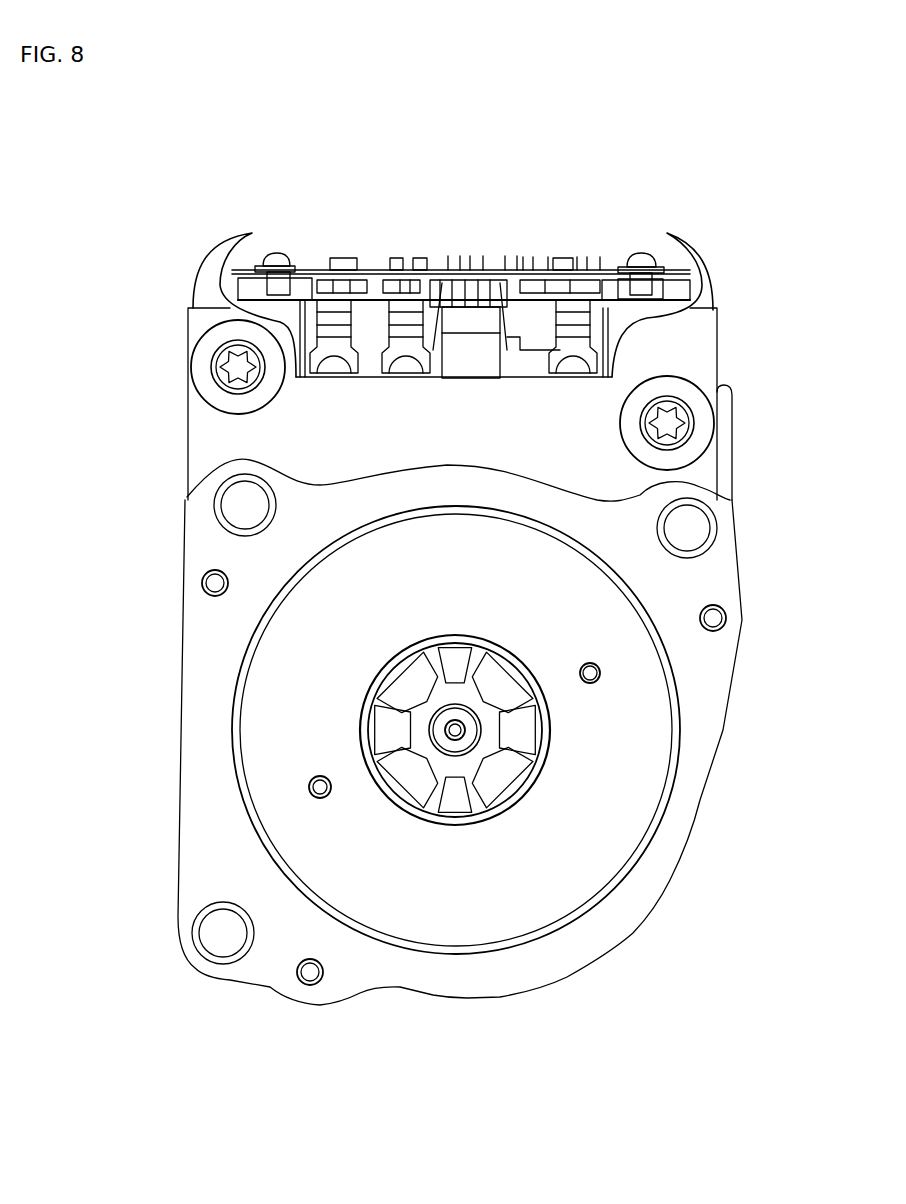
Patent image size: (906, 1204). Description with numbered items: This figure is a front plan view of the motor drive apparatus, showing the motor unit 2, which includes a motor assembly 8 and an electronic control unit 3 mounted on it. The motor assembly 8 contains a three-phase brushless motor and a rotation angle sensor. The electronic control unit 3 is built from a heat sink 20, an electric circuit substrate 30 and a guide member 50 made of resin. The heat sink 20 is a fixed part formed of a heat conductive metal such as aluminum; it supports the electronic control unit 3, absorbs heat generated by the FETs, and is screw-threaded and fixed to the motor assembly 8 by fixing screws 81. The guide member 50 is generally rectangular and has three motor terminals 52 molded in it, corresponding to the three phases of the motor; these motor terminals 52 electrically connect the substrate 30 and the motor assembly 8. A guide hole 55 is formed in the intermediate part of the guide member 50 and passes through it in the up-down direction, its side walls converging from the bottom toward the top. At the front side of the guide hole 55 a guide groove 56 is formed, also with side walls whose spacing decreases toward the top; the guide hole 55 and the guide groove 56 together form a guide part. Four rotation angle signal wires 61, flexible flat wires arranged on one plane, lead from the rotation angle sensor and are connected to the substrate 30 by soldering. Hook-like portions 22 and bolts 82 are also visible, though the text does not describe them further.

The motor unit 2 is at (770, 827).
The electronic control unit 3 is at (722, 298).
The motor assembly 8 is at (750, 621).
The heat sink 20 is at (197, 322).
The hook portion 22 is at (685, 242).
The electric circuit substrate 30 is at (322, 278).
The guide member 50 is at (372, 300).
The motor terminals 52 is at (338, 352).
The guide hole 55 is at (485, 352).
The guide groove 56 is at (485, 292).
The rotation angle signal wires 61 is at (437, 345).
The fixing screws 81 is at (232, 398).
The bolt 82 is at (277, 254).